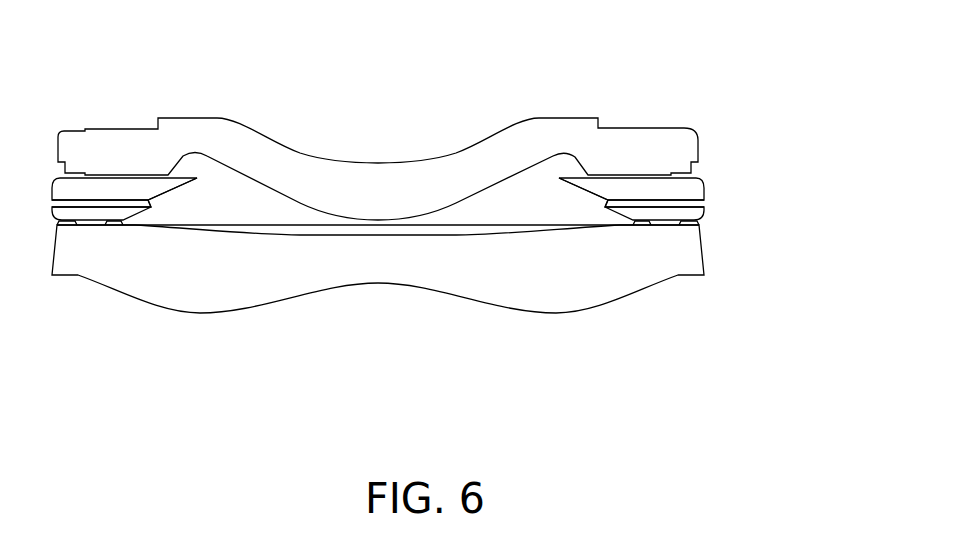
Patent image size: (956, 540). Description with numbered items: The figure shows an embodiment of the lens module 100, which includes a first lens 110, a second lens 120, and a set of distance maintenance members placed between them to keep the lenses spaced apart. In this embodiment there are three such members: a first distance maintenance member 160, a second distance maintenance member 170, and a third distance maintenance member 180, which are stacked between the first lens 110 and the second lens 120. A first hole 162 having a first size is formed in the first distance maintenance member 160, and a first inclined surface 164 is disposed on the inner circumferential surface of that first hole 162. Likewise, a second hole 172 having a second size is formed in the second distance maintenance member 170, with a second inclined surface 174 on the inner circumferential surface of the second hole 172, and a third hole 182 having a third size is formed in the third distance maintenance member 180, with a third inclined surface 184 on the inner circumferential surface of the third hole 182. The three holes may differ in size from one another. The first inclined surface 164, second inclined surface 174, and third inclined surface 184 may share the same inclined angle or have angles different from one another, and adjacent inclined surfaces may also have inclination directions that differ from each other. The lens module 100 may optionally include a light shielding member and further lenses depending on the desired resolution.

The lens module 100 is at (673, 92).
The first lens 110 is at (685, 160).
The second lens 120 is at (687, 263).
The first distance maintenance member 160 is at (695, 190).
The first hole 162 is at (549, 175).
The first inclined surface 164 is at (182, 190).
The second distance maintenance member 170 is at (700, 207).
The second hole 172 is at (581, 200).
The second inclined surface 174 is at (158, 207).
The third distance maintenance member 180 is at (700, 220).
The third hole 182 is at (608, 222).
The third inclined surface 184 is at (135, 220).